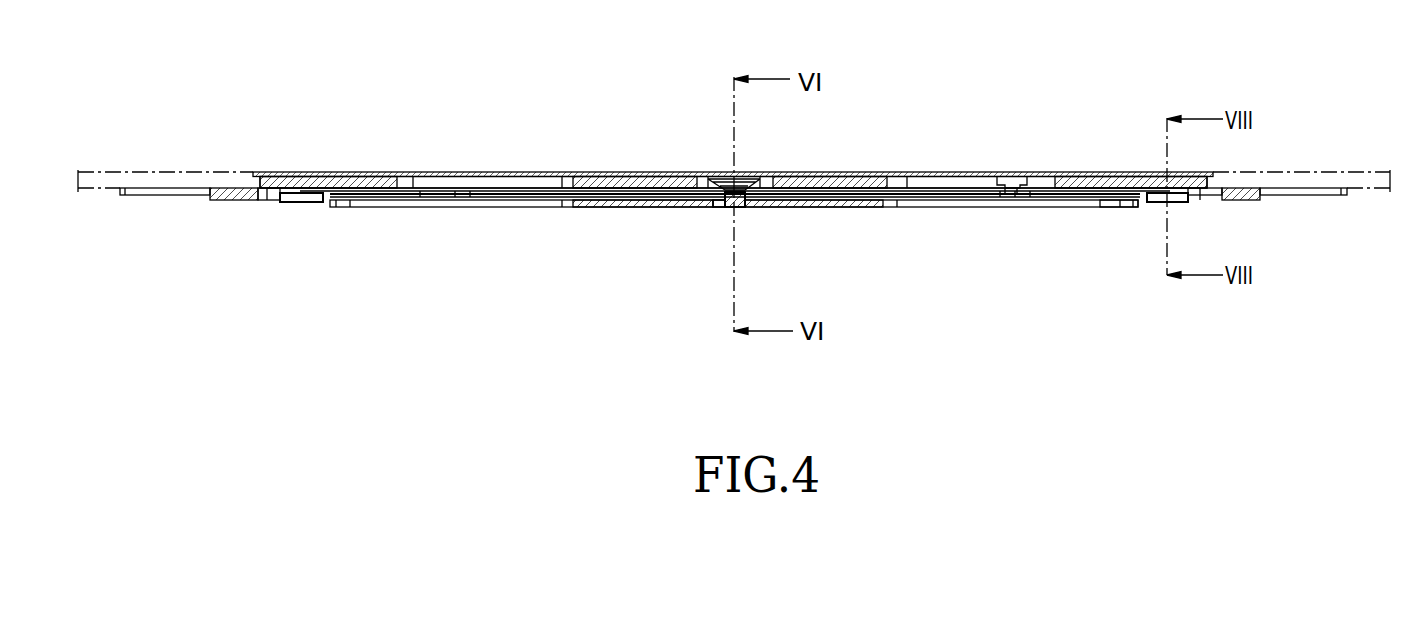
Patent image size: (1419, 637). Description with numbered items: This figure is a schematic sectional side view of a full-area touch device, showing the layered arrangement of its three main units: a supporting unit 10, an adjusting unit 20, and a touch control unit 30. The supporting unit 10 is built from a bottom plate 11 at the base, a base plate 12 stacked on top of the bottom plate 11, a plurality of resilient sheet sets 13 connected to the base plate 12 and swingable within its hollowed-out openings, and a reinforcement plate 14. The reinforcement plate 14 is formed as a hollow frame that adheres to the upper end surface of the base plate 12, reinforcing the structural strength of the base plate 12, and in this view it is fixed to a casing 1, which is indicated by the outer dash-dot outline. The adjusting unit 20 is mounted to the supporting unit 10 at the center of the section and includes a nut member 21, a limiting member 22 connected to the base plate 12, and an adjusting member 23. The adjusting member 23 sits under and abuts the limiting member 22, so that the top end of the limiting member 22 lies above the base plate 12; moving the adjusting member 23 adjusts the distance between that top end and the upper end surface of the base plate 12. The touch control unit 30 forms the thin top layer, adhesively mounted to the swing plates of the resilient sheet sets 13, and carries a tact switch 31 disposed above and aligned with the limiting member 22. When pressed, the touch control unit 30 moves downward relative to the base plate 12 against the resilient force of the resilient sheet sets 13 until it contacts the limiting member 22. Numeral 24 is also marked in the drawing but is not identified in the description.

The casing 1 is at (1278, 170).
The supporting unit 10 is at (1115, 208).
The bottom plate 11 is at (632, 207).
The base plate 12 is at (1223, 200).
The resilient sheet sets 13 is at (1143, 170).
The reinforcement plate 14 is at (1313, 196).
The adjusting unit 20 is at (720, 208).
The nut member 21 is at (719, 203).
The limiting member 22 is at (763, 207).
The adjusting member 23 is at (737, 207).
The upper linkage plate 24 is at (692, 170).
The touch control unit 30 is at (933, 170).
The tact switch 31 is at (727, 170).